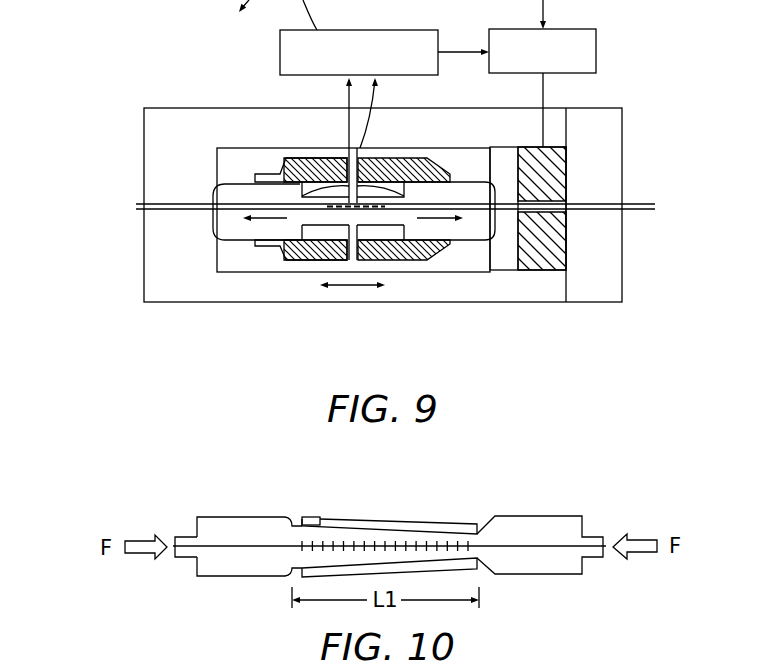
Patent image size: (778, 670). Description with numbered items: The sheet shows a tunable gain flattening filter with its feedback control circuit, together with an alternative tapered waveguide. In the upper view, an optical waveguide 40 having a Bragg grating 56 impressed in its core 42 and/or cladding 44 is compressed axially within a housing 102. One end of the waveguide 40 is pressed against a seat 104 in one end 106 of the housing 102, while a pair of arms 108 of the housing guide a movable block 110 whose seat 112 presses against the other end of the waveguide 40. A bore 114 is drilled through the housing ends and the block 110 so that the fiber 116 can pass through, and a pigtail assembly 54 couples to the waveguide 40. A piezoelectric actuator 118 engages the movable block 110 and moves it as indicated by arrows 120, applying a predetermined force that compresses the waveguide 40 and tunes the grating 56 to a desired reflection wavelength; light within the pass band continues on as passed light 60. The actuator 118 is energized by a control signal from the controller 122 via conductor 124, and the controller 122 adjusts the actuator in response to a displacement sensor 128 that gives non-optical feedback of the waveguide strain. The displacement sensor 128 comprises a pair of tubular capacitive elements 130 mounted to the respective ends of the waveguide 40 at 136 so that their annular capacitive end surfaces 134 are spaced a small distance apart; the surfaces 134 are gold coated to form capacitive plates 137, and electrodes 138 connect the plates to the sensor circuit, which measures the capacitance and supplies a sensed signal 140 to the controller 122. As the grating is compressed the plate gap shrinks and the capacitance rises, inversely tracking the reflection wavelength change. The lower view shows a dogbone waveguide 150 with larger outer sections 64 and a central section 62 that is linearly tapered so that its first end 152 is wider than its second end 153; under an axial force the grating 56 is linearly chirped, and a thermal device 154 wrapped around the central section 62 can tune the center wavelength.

In FIG. 9, the optical waveguide 40 is at (227, 173).
In FIG. 9, the core 42 is at (252, 200).
In FIG. 10, the core 42 is at (218, 549).
In FIG. 9, the cladding 44 is at (230, 228).
In FIG. 10, the cladding 44 is at (238, 573).
In FIG. 9, the pigtail assembly 54 is at (138, 214).
In FIG. 9, the Bragg grating 56 is at (370, 206).
In FIG. 10, the Bragg grating 56 is at (336, 543).
In FIG. 9, the passed light 60 is at (440, 224).
In FIG. 10, the central section 62 is at (320, 514).
In FIG. 10, the larger outer sections 64 is at (243, 517).
In FIG. 9, the housing 102 is at (188, 104).
In FIG. 9, the seat 104 is at (210, 186).
In FIG. 9, the end of housing 106 is at (152, 162).
In FIG. 9, the arms 108 is at (508, 108).
In FIG. 9, the movable block 110 is at (513, 153).
In FIG. 9, the seat 112 is at (490, 181).
In FIG. 9, the bore 114 is at (172, 213).
In FIG. 9, the fiber 116 is at (143, 205).
In FIG. 9, the actuator 118 is at (555, 192).
In FIG. 9, the arrows 120 is at (343, 287).
In FIG. 9, the controller 122 is at (597, 29).
In FIG. 9, the conductor 124 is at (545, 97).
In FIG. 9, the displacement sensor 128 is at (397, 153).
In FIG. 9, the capacitive elements 130 is at (305, 158).
In FIG. 9, the capacitive end surface 134 is at (312, 191).
In FIG. 9, the mounting locations 136 is at (263, 247).
In FIG. 9, the capacitive plates 137 is at (362, 158).
In FIG. 9, the electrodes 138 is at (343, 88).
In FIG. 9, the sensed signal 140 is at (469, 50).
In FIG. 10, the waveguide 150 is at (436, 486).
In FIG. 10, the first end 152 is at (292, 517).
In FIG. 10, the second end 153 is at (493, 513).
In FIG. 10, the thermal device 154 is at (466, 526).